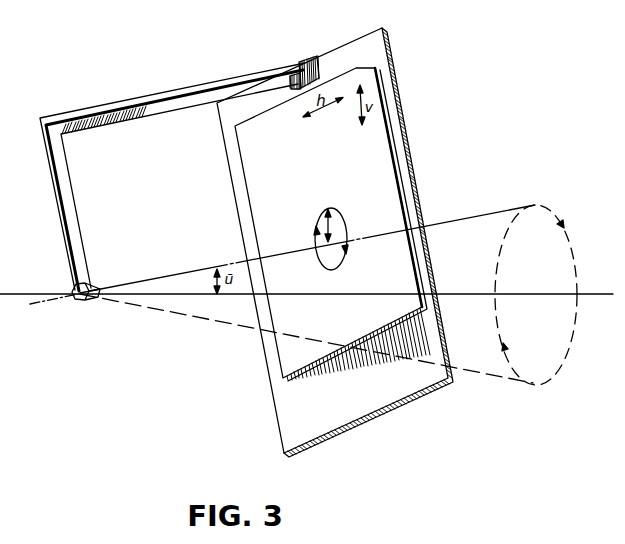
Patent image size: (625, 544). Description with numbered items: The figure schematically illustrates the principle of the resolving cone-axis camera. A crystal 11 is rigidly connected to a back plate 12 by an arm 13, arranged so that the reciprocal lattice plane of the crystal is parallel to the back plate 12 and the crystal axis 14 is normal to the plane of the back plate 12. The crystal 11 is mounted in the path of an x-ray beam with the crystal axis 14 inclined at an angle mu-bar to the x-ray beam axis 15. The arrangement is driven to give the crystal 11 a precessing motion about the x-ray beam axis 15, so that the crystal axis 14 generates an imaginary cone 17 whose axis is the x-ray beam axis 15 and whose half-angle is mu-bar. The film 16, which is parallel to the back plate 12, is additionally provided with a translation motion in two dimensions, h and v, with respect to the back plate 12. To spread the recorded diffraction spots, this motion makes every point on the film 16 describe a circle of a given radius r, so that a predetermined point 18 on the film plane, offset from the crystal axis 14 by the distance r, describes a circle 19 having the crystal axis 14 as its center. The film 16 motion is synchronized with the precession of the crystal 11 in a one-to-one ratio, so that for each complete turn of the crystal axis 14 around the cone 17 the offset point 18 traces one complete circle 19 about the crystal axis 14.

The crystal 11 is at (86, 298).
The back plate 12 is at (377, 48).
The arm 13 is at (203, 90).
The crystal axis 14 is at (478, 212).
The x-ray beam axis 15 is at (218, 295).
The film 16 is at (375, 157).
The imaginary cone 17 is at (556, 211).
The predetermined point 18 is at (328, 210).
The circle 19 is at (345, 233).